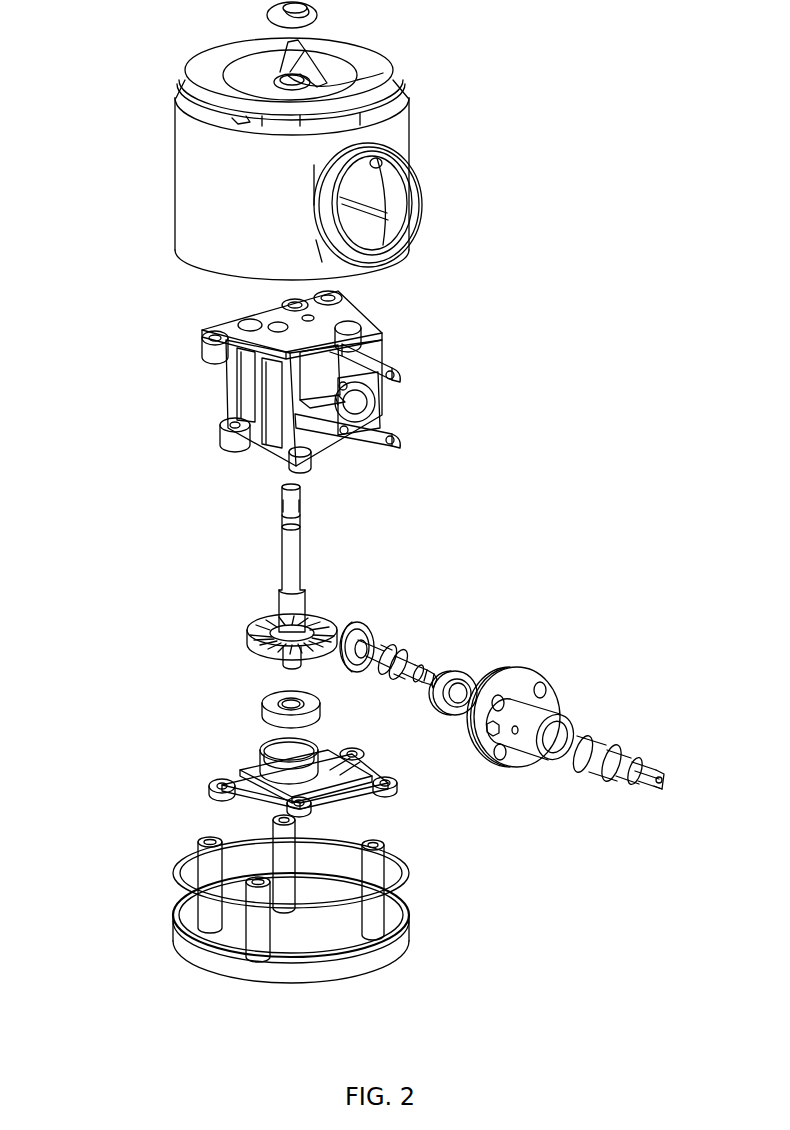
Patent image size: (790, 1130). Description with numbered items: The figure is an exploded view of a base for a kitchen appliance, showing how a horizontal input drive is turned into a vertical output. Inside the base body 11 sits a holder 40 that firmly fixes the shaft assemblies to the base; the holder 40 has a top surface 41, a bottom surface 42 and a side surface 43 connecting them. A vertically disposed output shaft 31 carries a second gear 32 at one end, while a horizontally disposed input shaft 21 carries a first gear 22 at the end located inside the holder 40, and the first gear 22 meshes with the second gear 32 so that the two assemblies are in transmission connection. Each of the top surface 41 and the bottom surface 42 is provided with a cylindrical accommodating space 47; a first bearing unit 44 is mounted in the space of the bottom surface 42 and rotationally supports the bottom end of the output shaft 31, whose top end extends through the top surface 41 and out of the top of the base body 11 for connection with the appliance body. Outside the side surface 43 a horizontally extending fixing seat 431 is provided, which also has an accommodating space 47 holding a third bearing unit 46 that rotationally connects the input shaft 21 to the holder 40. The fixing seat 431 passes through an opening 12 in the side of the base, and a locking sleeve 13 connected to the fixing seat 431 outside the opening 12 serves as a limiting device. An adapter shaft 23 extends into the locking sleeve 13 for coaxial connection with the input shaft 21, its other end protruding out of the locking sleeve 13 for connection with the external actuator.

The base body 11 is at (200, 188).
The opening 12 is at (400, 182).
The holder 40 is at (303, 382).
The top surface 41 is at (233, 322).
The side surface 43 is at (372, 348).
The fixing seat 431 is at (372, 393).
The output shaft 31 is at (290, 568).
The second gear 32 is at (250, 635).
The first gear 22 is at (352, 628).
The input shaft 21 is at (382, 648).
The third bearing unit 46 is at (450, 672).
The locking sleeve 13 is at (522, 683).
The adapter shaft 23 is at (610, 752).
The first bearing unit 44 is at (268, 698).
The accommodating space 47 is at (265, 748).
The bottom surface 42 is at (271, 767).